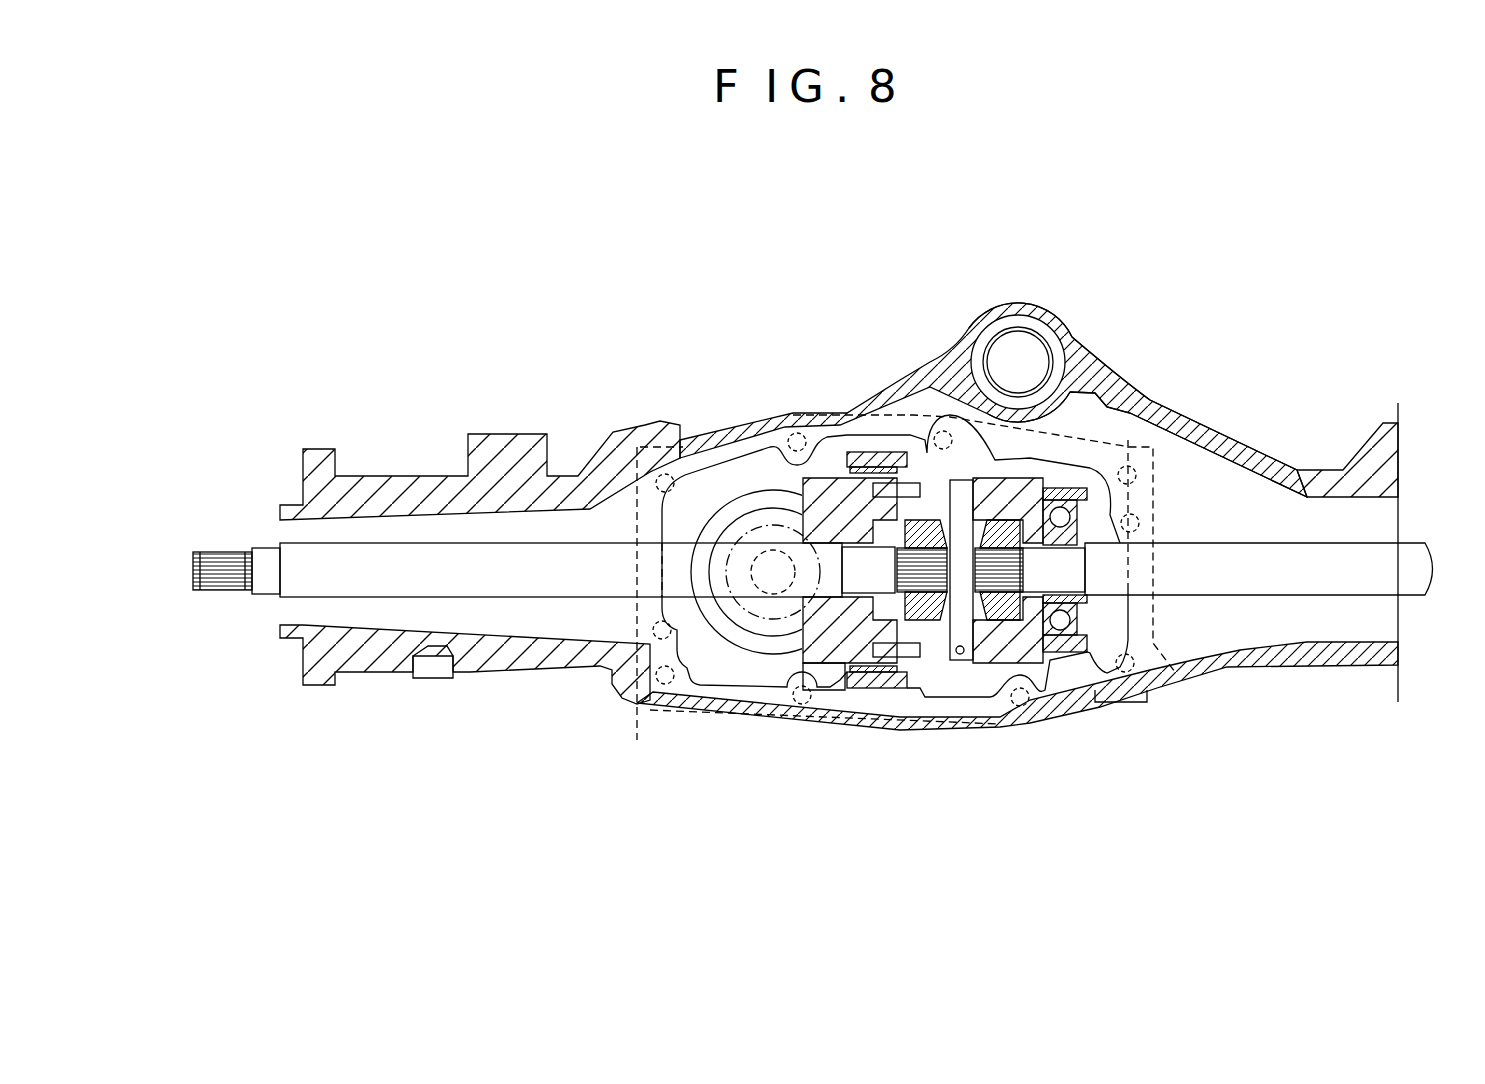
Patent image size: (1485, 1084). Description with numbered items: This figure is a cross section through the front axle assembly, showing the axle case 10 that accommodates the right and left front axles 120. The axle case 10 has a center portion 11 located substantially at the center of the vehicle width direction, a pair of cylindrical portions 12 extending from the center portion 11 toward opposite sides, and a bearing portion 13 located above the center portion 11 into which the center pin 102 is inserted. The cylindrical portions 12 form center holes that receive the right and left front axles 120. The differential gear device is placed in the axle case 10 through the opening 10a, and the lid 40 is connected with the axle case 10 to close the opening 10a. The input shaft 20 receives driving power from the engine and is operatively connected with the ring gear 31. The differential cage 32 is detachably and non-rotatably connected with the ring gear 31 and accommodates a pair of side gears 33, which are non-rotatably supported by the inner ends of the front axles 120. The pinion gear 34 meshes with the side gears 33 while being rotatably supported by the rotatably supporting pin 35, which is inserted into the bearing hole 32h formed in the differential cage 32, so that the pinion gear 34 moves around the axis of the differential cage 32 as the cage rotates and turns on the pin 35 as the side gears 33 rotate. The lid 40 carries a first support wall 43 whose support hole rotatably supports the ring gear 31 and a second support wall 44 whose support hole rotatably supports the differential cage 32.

The axle case 10 is at (578, 425).
The opening 10a is at (737, 670).
The center portion 11 is at (1120, 380).
The cylindrical portions 12 is at (385, 485).
The bearing portion 13 is at (1038, 304).
The center pin 102 is at (1026, 360).
The input shaft 20 is at (777, 558).
The ring gear 31 is at (853, 650).
The differential cage 32 is at (992, 650).
The bearing hole 32h is at (938, 430).
The side gears 33 is at (942, 660).
The pinion gear 34 is at (930, 480).
The rotatably supporting pin 35 is at (963, 663).
The lid 40 is at (690, 690).
The first support wall 43 is at (873, 453).
The second support wall 44 is at (1063, 493).
The front axles 120 is at (325, 582).